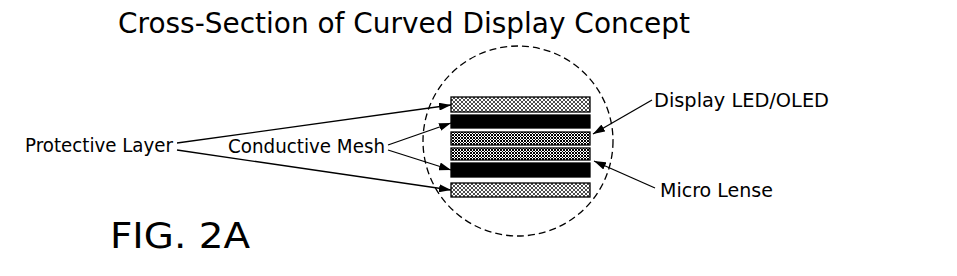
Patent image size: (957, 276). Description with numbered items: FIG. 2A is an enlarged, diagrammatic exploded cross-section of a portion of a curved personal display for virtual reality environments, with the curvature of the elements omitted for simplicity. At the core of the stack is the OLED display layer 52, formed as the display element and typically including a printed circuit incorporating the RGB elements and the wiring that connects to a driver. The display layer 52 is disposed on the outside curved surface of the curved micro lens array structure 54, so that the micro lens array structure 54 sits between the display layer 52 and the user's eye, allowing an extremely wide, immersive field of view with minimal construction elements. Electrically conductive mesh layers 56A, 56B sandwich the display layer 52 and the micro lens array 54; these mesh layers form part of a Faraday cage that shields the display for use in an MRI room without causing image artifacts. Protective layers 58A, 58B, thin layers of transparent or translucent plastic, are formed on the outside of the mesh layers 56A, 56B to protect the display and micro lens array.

The protective layer 58A is at (451, 105).
The electrically conductive mesh layer 56A is at (590, 121).
The OLED display layer 52 is at (590, 138).
The micro lens array structure 54 is at (590, 153).
The electrically conductive mesh layer 56B is at (590, 171).
The protective layer 58B is at (457, 193).